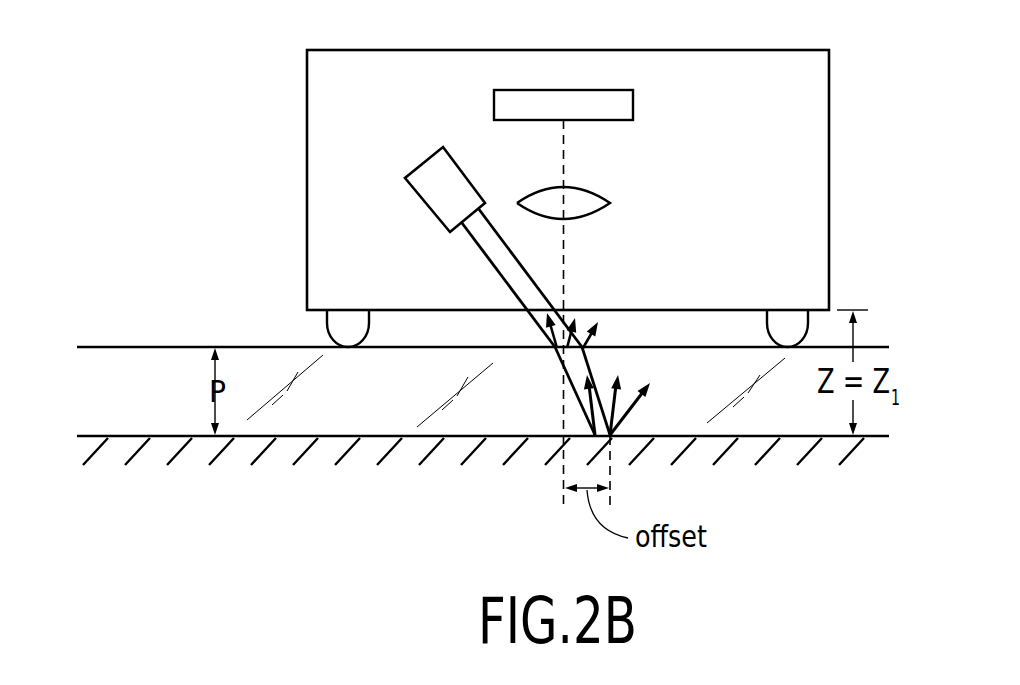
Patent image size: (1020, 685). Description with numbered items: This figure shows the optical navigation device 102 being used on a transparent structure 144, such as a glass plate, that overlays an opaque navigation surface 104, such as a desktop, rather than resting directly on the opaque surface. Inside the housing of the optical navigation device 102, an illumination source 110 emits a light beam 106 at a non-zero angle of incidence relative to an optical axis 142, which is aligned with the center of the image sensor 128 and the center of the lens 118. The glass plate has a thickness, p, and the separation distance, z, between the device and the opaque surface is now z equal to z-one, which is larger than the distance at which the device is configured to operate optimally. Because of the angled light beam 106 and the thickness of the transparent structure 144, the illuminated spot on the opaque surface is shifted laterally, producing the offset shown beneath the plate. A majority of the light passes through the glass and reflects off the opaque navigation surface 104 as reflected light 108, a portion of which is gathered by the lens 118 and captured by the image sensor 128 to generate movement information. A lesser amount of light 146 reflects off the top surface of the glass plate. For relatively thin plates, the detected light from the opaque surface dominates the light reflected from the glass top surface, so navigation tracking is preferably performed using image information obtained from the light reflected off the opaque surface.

The optical navigation device 102 is at (713, 50).
The image sensor 128 is at (636, 105).
The optical axis 142 is at (563, 150).
The lens 118 is at (597, 193).
The illumination source 110 is at (422, 165).
The light beam 106 is at (472, 250).
The light reflected off the top surface of the glass plate 146 is at (603, 338).
The reflected light 108 is at (655, 408).
The transparent structure 144 is at (178, 392).
The navigation surface 104 is at (118, 424).